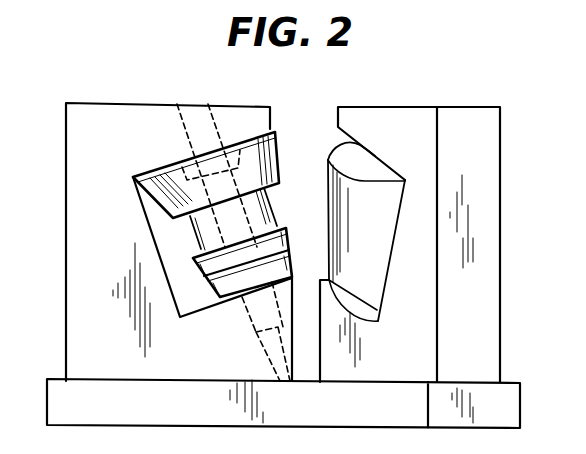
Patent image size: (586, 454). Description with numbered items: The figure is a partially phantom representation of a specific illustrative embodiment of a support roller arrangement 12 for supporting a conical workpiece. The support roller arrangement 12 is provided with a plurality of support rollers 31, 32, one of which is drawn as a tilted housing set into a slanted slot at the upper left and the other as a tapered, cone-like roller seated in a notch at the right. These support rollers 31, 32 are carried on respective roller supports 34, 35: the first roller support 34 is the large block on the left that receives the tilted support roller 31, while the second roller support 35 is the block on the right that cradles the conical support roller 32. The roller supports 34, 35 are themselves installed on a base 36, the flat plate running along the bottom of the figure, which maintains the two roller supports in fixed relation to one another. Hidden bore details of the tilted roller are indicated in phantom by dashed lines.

The support roller arrangement 12 is at (560, 127).
The support roller 31 is at (163, 169).
The support roller 32 is at (365, 198).
The roller support 34 is at (90, 273).
The roller support 35 is at (481, 182).
The base 36 is at (490, 412).